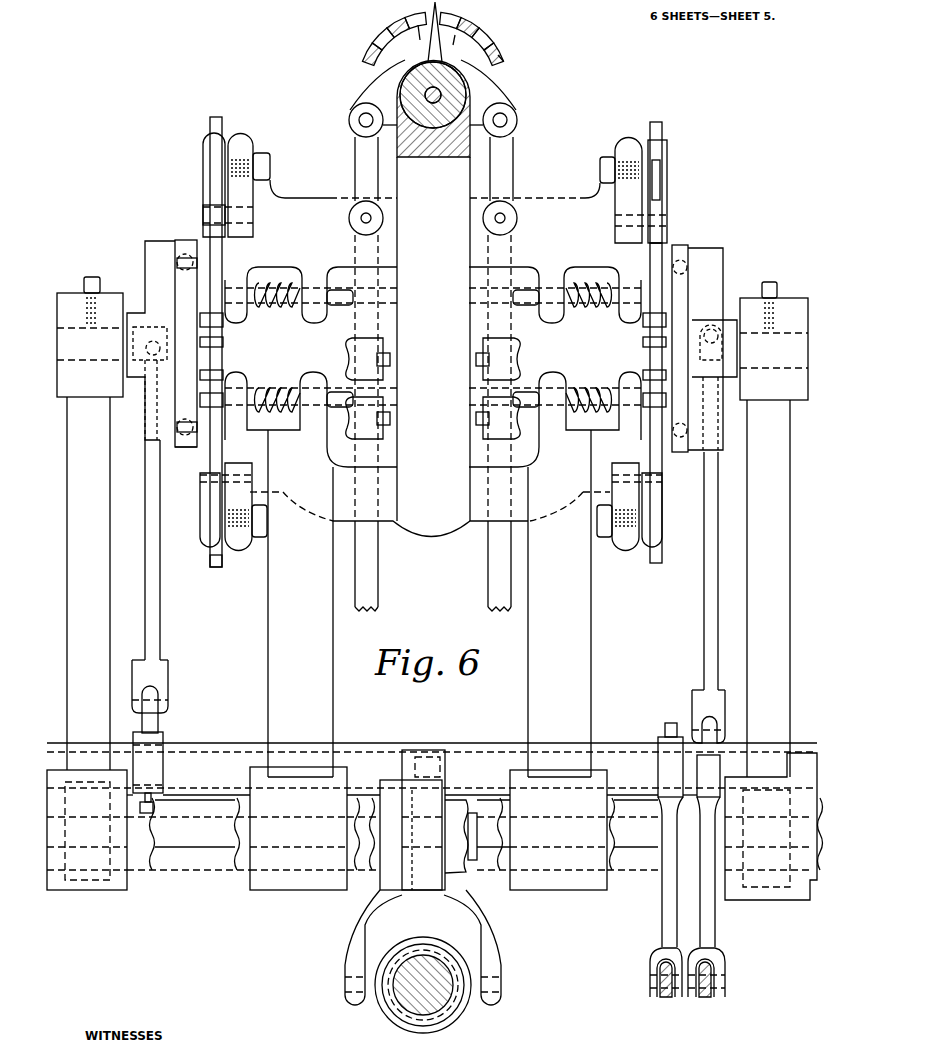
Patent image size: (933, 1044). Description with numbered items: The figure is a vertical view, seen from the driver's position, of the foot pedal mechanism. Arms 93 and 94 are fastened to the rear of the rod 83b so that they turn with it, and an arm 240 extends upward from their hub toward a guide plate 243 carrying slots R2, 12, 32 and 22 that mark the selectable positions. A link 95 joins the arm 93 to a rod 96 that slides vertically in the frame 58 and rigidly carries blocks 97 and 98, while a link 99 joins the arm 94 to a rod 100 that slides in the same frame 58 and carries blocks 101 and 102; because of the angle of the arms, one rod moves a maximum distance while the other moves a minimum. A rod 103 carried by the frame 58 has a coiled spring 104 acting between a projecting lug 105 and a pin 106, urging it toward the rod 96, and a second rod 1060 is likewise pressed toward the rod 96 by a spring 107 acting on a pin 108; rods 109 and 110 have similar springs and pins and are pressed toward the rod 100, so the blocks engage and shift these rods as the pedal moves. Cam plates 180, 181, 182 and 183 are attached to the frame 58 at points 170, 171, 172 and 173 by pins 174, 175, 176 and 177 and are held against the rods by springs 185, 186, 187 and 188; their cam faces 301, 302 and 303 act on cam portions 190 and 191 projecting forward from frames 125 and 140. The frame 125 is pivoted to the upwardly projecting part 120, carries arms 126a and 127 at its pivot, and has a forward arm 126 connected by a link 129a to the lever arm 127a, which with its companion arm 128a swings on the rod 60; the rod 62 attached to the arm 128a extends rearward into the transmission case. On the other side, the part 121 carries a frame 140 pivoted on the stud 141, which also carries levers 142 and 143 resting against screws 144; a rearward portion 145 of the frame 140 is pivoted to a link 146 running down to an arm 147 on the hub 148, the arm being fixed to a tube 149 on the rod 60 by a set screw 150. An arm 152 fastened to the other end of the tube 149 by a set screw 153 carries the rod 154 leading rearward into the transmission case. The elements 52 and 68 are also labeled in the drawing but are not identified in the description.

The slot R2 is at (379, 47).
The slot 12 is at (396, 30).
The slot 32 is at (465, 34).
The slot 22 is at (488, 44).
The arm 240 is at (430, 26).
The guide plate 243 is at (474, 31).
The rod 83b is at (443, 90).
The arm 93 is at (382, 101).
The arm 94 is at (493, 100).
The link 95 is at (355, 167).
The link 99 is at (513, 156).
The rod 96 is at (370, 300).
The rod 100 is at (497, 300).
The frame 58 is at (612, 648).
The projecting lug 105 is at (251, 322).
The pin 106 is at (303, 287).
The coiled spring 104 is at (273, 306).
The rod 103 is at (338, 306).
The spring 107 is at (311, 417).
The pin 108 is at (295, 400).
The rod 1060 is at (343, 388).
The block 97 is at (385, 343).
The block 98 is at (367, 410).
The rod 109 is at (527, 297).
The rod 110 is at (530, 390).
The block 101 is at (497, 350).
The block 102 is at (492, 433).
The cam face 303 is at (213, 322).
The cam portion 191 is at (215, 357).
The cam face 301 is at (652, 323).
The cam portion 190 is at (653, 342).
The cam face 302 is at (650, 383).
The spring 188 is at (213, 123).
The pin 177 is at (210, 168).
The cam plate 183 is at (207, 193).
The attachment point 173 is at (240, 140).
The attachment point 172 is at (244, 524).
The pin 176 is at (203, 527).
The cam plate 182 is at (207, 492).
The spring 187 is at (206, 558).
The lever 142 is at (183, 240).
The screw 144 is at (197, 262).
The lever 143 is at (182, 450).
The frame 140 is at (148, 250).
The rearwardly projecting portion 145 is at (150, 356).
The stud 141 is at (76, 343).
The upwardly projecting part 121 is at (93, 575).
The link 146 is at (150, 498).
The arm 147 is at (156, 725).
The hub 148 is at (155, 760).
The set screw 150 is at (147, 814).
The shaft 60 is at (481, 745).
The tube 149 is at (358, 743).
The shaft 52 is at (240, 868).
The clamp ring 68 is at (453, 973).
The attachment point 170 is at (628, 142).
The spring 185 is at (656, 122).
The cam plate 180 is at (667, 200).
The pin 174 is at (660, 170).
The arm 127 is at (686, 246).
The frame 125 is at (712, 283).
The arm 126 is at (718, 332).
The upwardly projecting part 120 is at (785, 598).
The link 129a is at (708, 605).
The arm 126a is at (672, 474).
The attachment point 171 is at (623, 547).
The pin 175 is at (657, 525).
The cam plate 181 is at (657, 552).
The spring 186 is at (637, 599).
The lever arm 127a is at (722, 742).
The set screw 153 is at (669, 723).
The arm 152 is at (660, 935).
The lever arm 128a is at (727, 935).
The rod 154 is at (642, 983).
The rod 62 is at (710, 996).